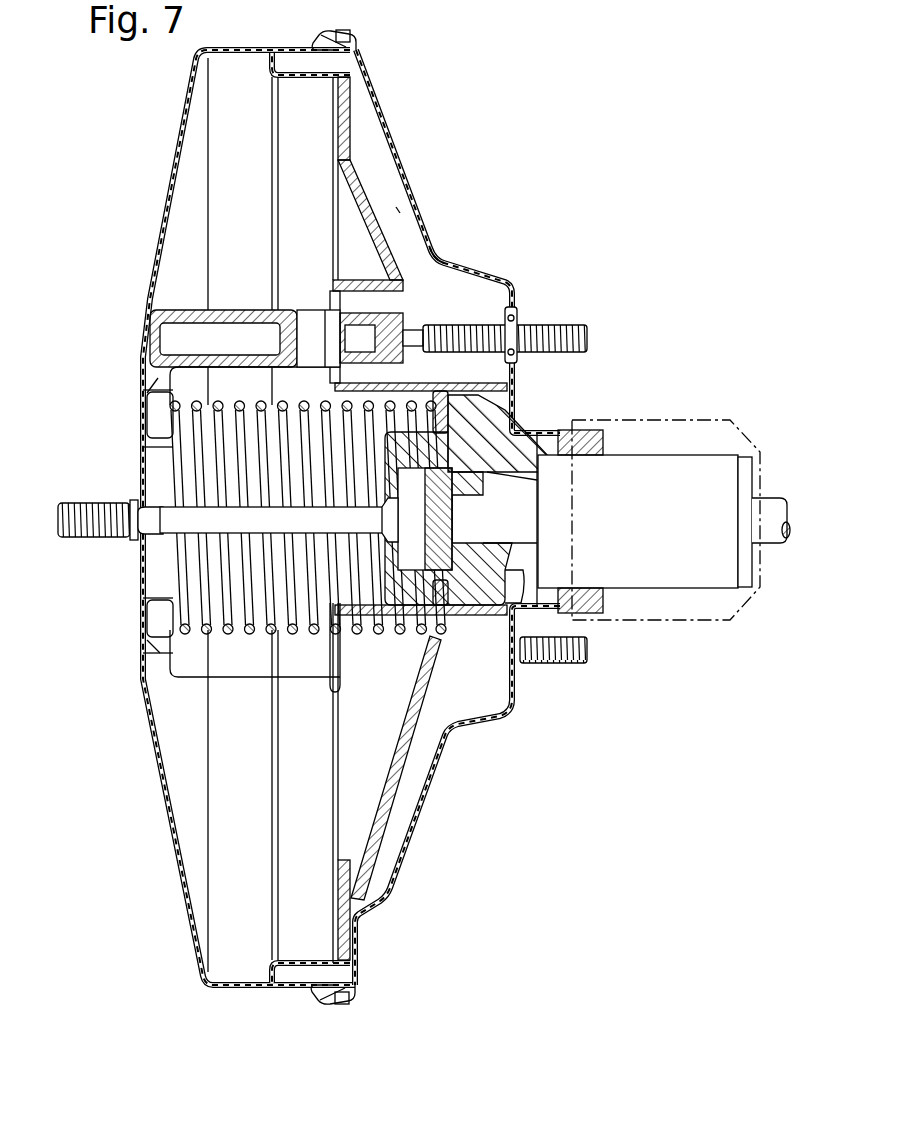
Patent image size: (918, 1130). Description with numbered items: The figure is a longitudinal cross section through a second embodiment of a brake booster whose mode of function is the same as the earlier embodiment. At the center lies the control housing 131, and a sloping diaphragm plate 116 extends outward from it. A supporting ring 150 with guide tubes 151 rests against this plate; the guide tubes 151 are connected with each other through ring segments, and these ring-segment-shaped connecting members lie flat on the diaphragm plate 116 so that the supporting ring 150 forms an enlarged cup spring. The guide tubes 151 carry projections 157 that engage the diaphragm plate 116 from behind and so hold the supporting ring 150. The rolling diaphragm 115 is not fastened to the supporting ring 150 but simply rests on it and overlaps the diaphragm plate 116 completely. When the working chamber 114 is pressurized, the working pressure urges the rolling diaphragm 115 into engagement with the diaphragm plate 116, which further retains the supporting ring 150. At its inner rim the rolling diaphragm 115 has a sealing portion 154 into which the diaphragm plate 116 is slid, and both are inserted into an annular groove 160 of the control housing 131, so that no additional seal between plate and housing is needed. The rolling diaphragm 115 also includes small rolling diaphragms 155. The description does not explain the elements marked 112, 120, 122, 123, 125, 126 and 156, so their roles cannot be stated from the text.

The rear shell 112 is at (430, 240).
The working chamber 114 is at (398, 210).
The rolling diaphragm 115 is at (363, 187).
The diaphragm plate 116 is at (353, 170).
The seal 120 is at (140, 627).
The spacer bolt 122 is at (187, 313).
The spring seat plate 123 is at (207, 633).
The mounting bolt 125 is at (580, 323).
The nut 126 is at (522, 305).
The control housing 131 is at (517, 450).
The supporting ring 150 is at (345, 712).
The guide tubes 151 is at (397, 773).
The sealing portion 154 is at (507, 703).
The small rolling diaphragms 155 is at (330, 295).
The rear shell sloped wall 156 is at (425, 718).
The projections 157 is at (433, 262).
The annular groove 160 is at (560, 623).